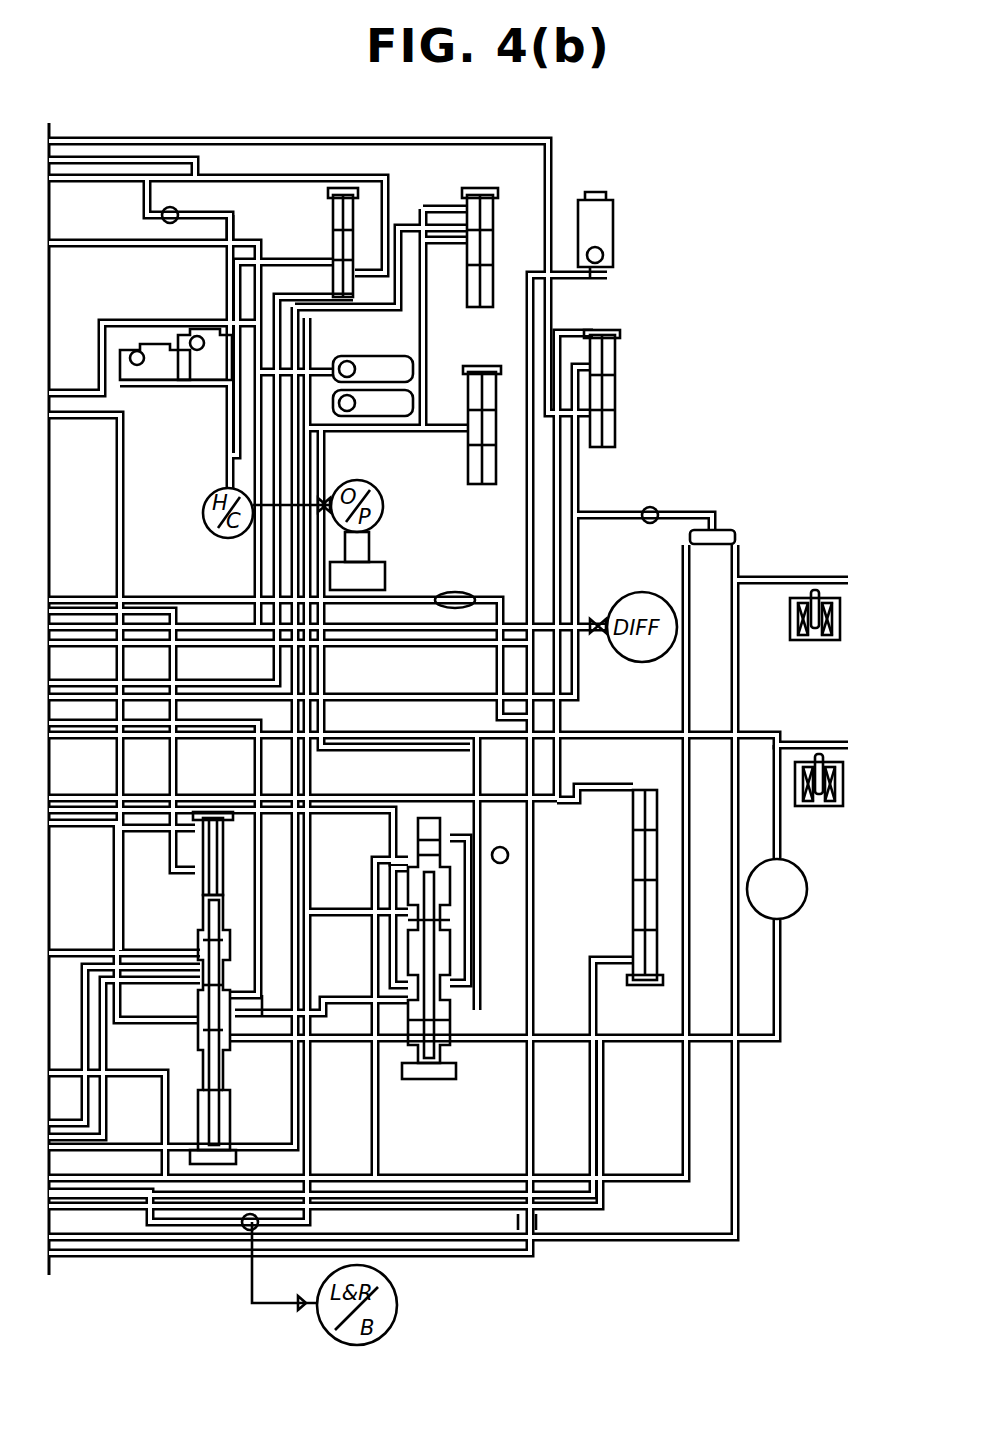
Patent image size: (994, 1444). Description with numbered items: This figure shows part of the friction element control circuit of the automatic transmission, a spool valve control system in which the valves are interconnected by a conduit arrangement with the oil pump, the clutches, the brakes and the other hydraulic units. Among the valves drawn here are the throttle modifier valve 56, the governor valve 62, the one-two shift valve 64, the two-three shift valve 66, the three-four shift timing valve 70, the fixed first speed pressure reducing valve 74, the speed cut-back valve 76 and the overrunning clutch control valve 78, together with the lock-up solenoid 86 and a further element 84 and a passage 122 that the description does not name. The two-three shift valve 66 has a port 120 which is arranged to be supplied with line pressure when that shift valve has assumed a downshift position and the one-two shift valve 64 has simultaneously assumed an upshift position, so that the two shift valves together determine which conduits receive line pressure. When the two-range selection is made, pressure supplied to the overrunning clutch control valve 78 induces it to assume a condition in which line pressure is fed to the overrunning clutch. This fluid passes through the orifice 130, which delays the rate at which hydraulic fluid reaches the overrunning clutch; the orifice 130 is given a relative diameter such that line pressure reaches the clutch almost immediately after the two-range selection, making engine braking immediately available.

The throttle modifier valve 56 is at (622, 400).
The governor valve 62 is at (808, 890).
The 1-2 shift valve 64 is at (440, 1085).
The 2-3 shift valve 66 is at (196, 926).
The 3-4 shift timing valve 70 is at (330, 217).
The fixed first speed pressure reducing valve 74 is at (467, 275).
The speed cut-back valve 76 is at (487, 370).
The overrunning clutch control valve 78 is at (630, 938).
The solenoid valve 84 is at (814, 742).
The lock-up solenoid 86 is at (805, 648).
The port 120 is at (198, 893).
The passage 122 is at (270, 1015).
The orifice 130 is at (516, 1222).